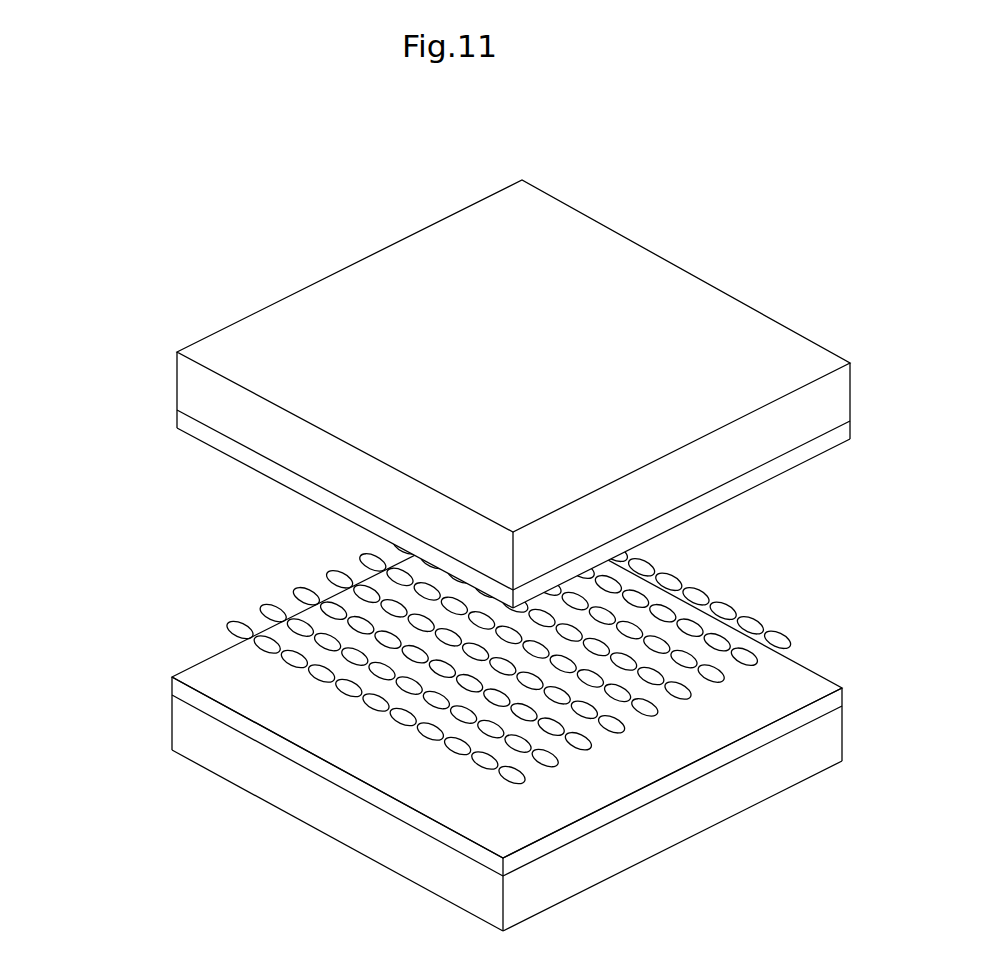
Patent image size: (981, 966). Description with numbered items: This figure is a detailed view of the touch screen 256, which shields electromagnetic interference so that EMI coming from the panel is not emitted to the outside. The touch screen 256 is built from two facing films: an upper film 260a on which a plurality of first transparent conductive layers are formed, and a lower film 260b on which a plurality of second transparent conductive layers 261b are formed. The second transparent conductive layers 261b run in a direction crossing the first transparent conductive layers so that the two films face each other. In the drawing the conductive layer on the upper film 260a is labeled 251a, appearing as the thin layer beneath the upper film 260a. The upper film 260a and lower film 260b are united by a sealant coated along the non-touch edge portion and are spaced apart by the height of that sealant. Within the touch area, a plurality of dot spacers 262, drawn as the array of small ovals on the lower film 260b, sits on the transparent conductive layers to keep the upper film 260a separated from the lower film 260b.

The touch screen 256 is at (97, 193).
The upper film 260a is at (182, 382).
The upper conductive layer 251a is at (182, 420).
The dot spacers 262 is at (228, 625).
The second transparent conductive layers 261b is at (185, 691).
The lower film 260b is at (185, 728).